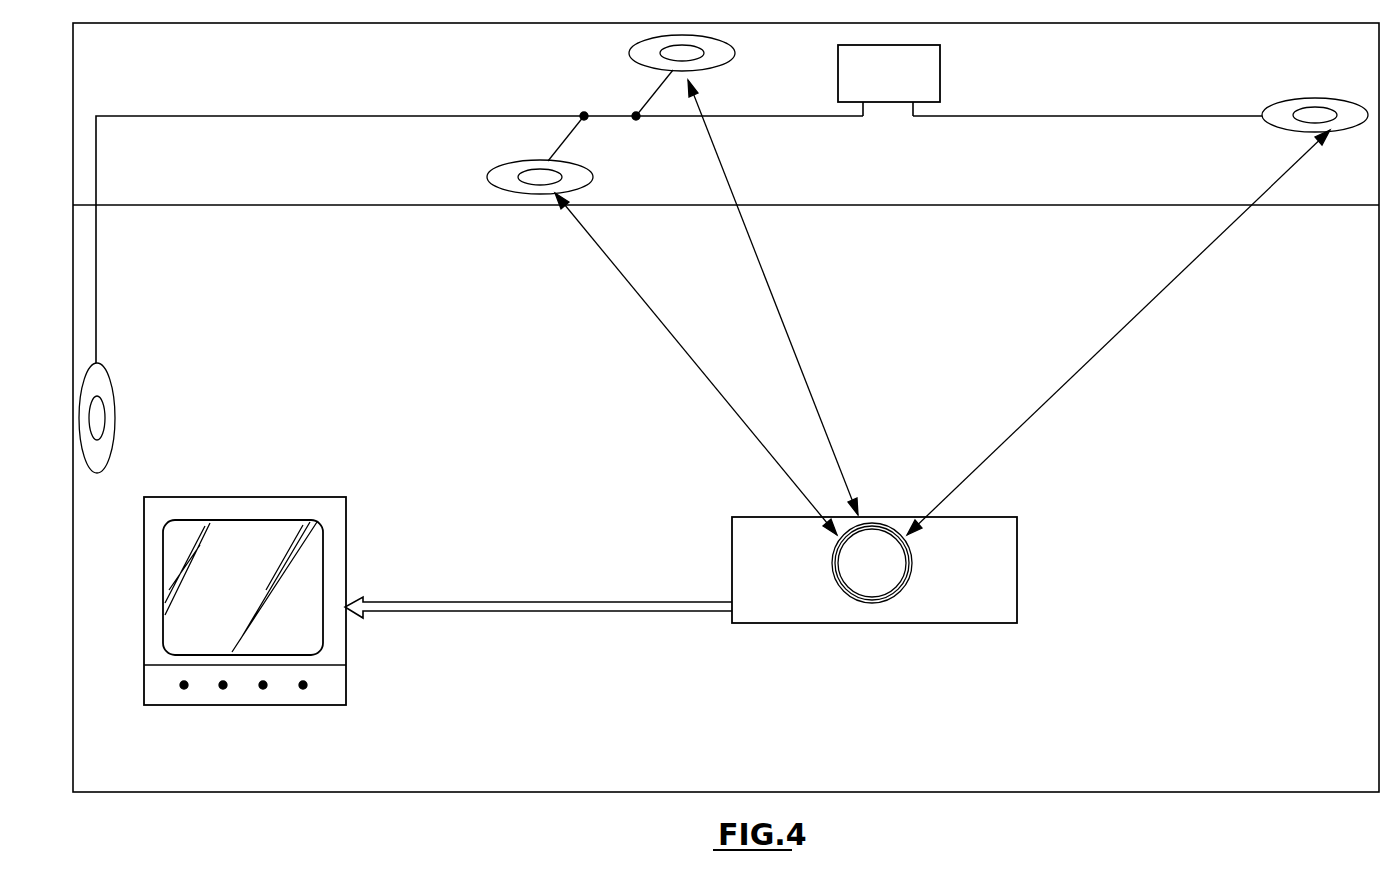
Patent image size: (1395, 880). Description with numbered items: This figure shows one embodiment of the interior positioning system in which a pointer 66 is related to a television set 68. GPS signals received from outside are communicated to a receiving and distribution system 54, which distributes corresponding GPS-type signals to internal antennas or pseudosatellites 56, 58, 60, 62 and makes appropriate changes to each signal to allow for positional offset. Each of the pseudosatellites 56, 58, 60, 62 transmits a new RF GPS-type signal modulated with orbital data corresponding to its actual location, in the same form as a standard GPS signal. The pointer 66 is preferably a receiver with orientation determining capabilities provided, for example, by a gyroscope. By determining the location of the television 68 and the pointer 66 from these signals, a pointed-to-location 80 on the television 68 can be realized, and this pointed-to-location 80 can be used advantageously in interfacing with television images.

The receiving and distribution system 54 is at (940, 80).
The pseudosatellite 56 is at (632, 55).
The pseudosatellite 58 is at (1315, 97).
The pseudosatellite 60 is at (490, 172).
The pseudosatellite 62 is at (115, 400).
The pointer 66 is at (1017, 562).
The television set 68 is at (280, 497).
The pointed-to-location 80 is at (324, 555).